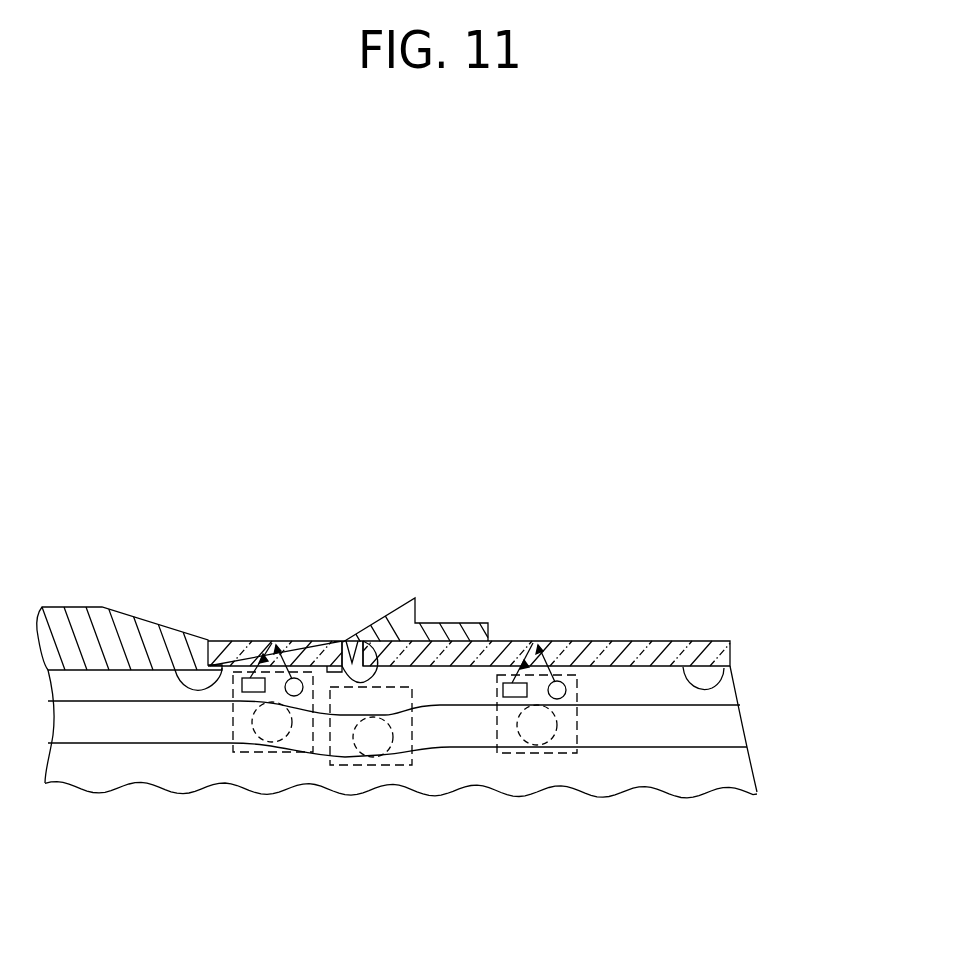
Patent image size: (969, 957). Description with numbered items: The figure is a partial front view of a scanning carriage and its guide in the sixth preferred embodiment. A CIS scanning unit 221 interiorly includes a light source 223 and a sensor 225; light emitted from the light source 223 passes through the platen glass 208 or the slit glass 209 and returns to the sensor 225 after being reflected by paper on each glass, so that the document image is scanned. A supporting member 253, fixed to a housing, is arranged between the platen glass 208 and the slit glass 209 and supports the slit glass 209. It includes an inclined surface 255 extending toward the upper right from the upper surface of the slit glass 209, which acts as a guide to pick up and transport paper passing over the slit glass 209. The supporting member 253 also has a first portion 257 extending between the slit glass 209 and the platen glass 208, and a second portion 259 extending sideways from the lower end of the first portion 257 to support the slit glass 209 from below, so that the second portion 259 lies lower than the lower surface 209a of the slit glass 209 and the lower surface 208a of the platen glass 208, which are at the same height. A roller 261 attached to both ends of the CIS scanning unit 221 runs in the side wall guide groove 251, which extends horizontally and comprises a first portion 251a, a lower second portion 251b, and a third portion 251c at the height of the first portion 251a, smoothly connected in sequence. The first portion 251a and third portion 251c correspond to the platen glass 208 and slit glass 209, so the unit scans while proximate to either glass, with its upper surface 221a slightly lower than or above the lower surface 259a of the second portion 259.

The platen glass 208 is at (662, 657).
The lower surface of the platen glass 208a is at (735, 672).
The slit glass 209 is at (259, 641).
The lower surface of the slit glass 209a is at (175, 670).
The CIS scanning unit 221 is at (278, 742).
The upper surface of the CIS scanning unit 221a is at (245, 672).
The light source 223 is at (292, 641).
The sensor 225 is at (245, 678).
The side wall guide groove 251 is at (705, 730).
The first portion of the side wall guide groove 251a is at (652, 730).
The second portion of the side wall guide groove 251b is at (332, 766).
The third portion of the side wall guide groove 251c is at (238, 752).
The supporting member 253 is at (388, 558).
The inclined surface 255 is at (400, 607).
The first portion of the supporting member 257 is at (352, 641).
The second portion of the supporting member 259 is at (342, 665).
The lower surface of the second portion 259a is at (363, 641).
The roller 261 is at (233, 722).